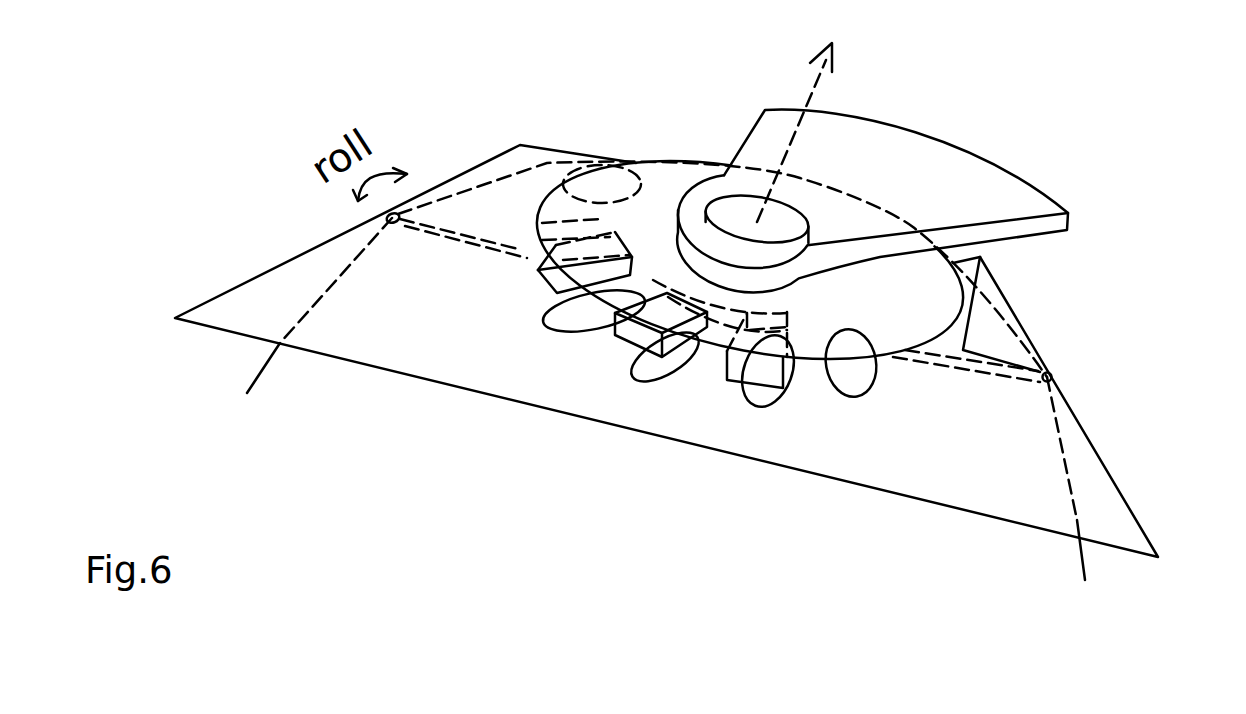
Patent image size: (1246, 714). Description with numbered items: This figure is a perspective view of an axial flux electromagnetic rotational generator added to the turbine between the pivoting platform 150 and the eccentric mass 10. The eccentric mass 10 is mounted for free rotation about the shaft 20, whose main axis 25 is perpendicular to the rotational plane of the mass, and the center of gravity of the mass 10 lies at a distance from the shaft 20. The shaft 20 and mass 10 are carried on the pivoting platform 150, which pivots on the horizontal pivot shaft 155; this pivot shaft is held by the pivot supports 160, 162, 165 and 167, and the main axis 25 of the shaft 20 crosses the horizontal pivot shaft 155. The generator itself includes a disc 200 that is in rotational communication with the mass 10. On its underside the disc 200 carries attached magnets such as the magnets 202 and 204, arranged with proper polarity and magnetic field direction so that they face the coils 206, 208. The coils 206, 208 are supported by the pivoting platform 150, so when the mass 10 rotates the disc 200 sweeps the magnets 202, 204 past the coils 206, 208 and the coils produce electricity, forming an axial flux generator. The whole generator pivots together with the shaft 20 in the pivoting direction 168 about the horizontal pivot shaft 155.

The eccentric mass 10 is at (967, 193).
The shaft 20 is at (732, 207).
The main axis 25 is at (807, 94).
The pivoting platform 150 is at (1113, 487).
The horizontal pivot shaft 155 is at (962, 350).
The pivot support 160 is at (1068, 497).
The pivot support 162 is at (1064, 326).
The pivot support 165 is at (260, 380).
The pivot support 167 is at (518, 172).
The pivoting direction 168 is at (368, 178).
The disc 200 is at (897, 353).
The magnet 202 is at (720, 357).
The magnet 204 is at (615, 334).
The coil 206 is at (546, 314).
The coil 208 is at (781, 402).